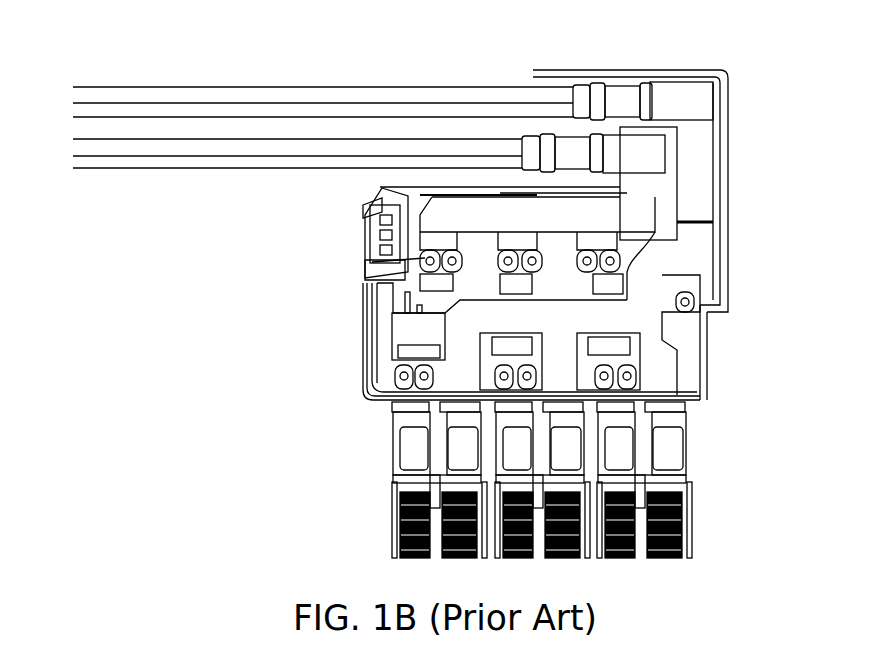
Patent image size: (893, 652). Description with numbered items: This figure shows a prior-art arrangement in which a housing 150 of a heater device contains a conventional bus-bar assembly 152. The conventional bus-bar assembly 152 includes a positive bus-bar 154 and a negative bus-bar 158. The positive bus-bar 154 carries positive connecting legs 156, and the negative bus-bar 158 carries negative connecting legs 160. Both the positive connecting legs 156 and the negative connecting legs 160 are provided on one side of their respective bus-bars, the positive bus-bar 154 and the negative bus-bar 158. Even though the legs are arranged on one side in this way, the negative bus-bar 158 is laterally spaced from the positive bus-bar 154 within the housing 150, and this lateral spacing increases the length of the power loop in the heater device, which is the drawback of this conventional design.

The housing 150 is at (285, 352).
The conventional bus-bar assembly 152 is at (565, 252).
The positive bus-bar 154 is at (633, 310).
The positive connecting legs 156 is at (623, 375).
The negative bus-bar 158 is at (633, 205).
The negative connecting legs 160 is at (372, 262).